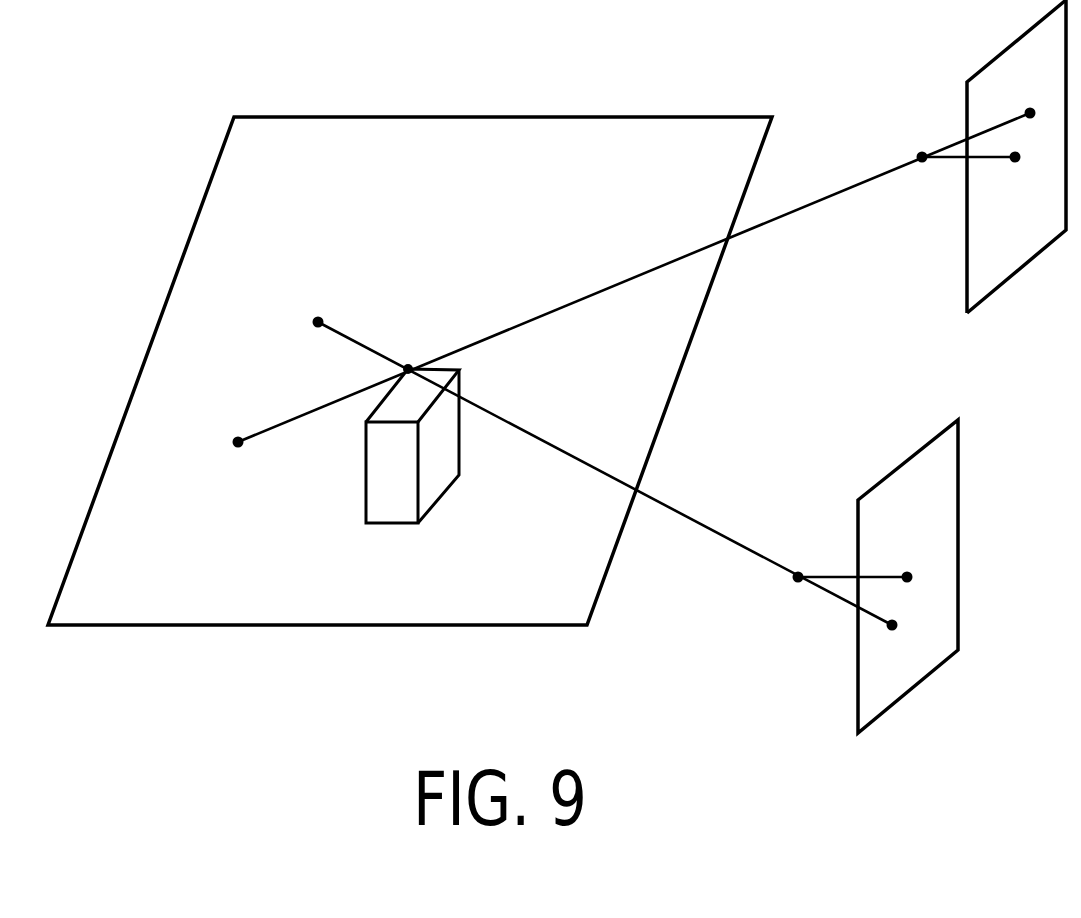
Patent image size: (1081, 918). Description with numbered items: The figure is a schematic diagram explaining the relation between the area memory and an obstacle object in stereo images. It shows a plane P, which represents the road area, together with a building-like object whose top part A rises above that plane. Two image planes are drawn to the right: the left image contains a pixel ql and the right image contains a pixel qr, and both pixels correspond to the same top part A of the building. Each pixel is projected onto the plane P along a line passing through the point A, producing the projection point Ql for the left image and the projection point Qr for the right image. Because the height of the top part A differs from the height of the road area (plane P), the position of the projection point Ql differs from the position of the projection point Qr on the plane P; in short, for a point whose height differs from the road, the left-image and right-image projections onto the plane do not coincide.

The plane P is at (410, 371).
The top part of a building A is at (412, 424).
The projection point Ql is at (314, 305).
The projection point Qr is at (225, 459).
The pixel of the right image qr is at (1028, 96).
The pixel of the left image ql is at (886, 647).